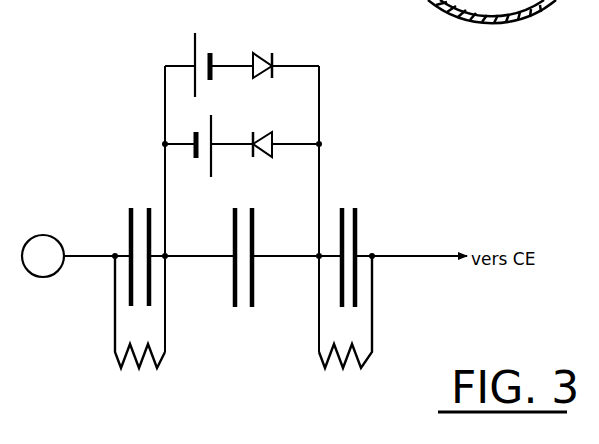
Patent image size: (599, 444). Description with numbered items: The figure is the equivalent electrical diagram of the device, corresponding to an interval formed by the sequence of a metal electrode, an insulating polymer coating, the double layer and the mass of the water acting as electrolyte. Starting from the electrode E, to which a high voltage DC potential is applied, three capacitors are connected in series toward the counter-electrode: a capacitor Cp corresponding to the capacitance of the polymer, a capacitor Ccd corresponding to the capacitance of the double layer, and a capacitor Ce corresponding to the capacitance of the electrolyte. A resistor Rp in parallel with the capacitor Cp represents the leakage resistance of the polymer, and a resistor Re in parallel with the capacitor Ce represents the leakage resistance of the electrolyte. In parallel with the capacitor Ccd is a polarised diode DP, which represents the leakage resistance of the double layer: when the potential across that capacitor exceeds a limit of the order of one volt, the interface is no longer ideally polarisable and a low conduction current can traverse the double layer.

The electrode E is at (43, 256).
The polarised diode DP is at (238, 53).
The capacitor Cp is at (141, 201).
The capacitor Ccd is at (252, 313).
The capacitor Ce is at (350, 201).
The resistor Rp is at (148, 373).
The resistor Re is at (349, 378).